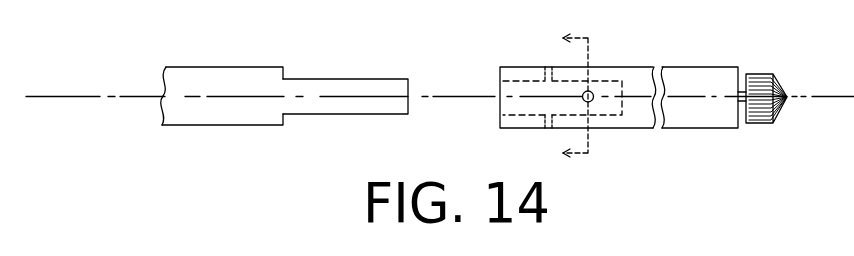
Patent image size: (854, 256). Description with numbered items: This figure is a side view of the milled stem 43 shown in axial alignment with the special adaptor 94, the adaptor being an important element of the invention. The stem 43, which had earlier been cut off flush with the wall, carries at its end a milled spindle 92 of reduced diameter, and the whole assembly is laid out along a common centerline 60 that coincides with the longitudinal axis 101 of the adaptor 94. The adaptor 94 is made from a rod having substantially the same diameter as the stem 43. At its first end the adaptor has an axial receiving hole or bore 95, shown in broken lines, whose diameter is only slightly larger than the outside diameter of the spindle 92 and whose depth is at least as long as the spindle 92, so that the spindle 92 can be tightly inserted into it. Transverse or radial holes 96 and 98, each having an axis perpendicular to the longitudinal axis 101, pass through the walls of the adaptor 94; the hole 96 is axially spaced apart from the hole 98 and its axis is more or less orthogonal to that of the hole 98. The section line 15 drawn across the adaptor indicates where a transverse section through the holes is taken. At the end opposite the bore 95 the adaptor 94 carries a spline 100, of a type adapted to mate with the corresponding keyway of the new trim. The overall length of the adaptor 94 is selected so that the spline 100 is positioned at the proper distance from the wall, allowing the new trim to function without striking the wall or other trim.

The section line 15 is at (560, 98).
The stem 43 is at (243, 128).
The axis / centerline 60 is at (127, 98).
The milled spindle 92 is at (323, 81).
The special adaptor 94 is at (690, 128).
The axial receiving hole 95 is at (517, 110).
The transverse hole 96 is at (548, 66).
The transverse hole 98 is at (593, 101).
The spline 100 is at (767, 73).
The longitudinal axis 101 is at (818, 100).